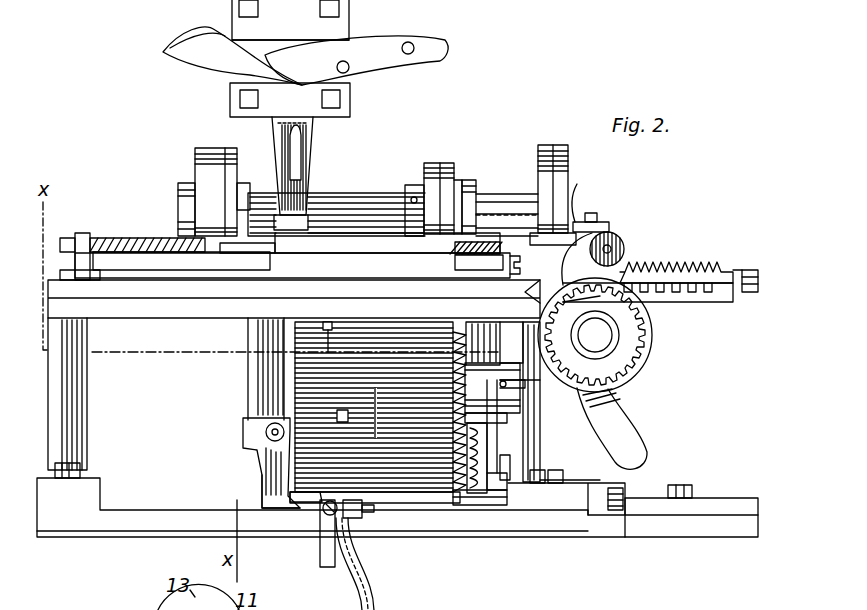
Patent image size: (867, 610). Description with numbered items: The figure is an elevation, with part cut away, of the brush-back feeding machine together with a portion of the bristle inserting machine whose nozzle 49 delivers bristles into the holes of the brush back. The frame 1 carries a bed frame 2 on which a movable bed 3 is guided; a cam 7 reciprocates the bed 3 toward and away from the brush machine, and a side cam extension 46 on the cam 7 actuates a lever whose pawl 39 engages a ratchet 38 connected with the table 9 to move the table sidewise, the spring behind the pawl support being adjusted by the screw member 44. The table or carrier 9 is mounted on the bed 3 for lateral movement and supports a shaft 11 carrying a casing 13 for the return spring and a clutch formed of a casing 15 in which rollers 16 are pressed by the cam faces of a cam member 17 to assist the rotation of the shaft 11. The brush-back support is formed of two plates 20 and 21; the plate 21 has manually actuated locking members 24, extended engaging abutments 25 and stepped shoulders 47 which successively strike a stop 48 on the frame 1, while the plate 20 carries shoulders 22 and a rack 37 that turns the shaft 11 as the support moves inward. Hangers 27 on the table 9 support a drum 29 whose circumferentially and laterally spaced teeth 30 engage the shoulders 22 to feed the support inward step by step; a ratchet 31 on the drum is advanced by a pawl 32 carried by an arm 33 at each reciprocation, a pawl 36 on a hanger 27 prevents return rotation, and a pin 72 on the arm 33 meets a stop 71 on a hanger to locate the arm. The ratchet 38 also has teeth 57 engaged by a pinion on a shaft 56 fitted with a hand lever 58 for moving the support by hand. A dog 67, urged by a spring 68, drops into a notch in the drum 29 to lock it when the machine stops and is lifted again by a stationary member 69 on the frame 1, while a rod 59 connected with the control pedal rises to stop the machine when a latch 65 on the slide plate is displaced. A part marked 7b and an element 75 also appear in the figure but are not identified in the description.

The frame 1 is at (527, 440).
The bed frame 2 is at (118, 303).
The movable bed 3 is at (90, 296).
The cam 7 is at (553, 147).
The base plate 7b is at (107, 517).
The table or carrier 9 is at (241, 262).
The shaft 11 is at (357, 196).
The casing 13 is at (203, 150).
The clutch casing 15 is at (430, 186).
The rollers 16 is at (458, 182).
The cam member 17 is at (466, 184).
The plate 20 is at (297, 265).
The plate 21 is at (387, 245).
The engaging shoulders 22 is at (490, 328).
The locking members 24 is at (238, 233).
The extended engaging abutments 25 is at (128, 243).
The hangers 27 is at (272, 336).
The drum 29 is at (375, 412).
The teeth 30 is at (342, 410).
The ratchet 31 is at (455, 384).
The pawl 32 is at (458, 507).
The arm 33 is at (482, 462).
The pawl 36 is at (384, 411).
The rack 37 is at (305, 218).
The ratchet 38 is at (672, 275).
The pawl 39 is at (612, 246).
The screw member 44 is at (748, 278).
The side cam extension 46 is at (576, 223).
The stepped shoulders 47 is at (88, 237).
The stop 48 is at (80, 263).
The nozzle 49 is at (310, 165).
The shaft 56 is at (595, 335).
The teeth 57 is at (705, 292).
The hand lever 58 is at (620, 418).
The rod 59 is at (353, 580).
The latch 65 is at (328, 540).
The dog 67 is at (273, 466).
The spring 68 is at (257, 424).
The stationary member 69 is at (302, 508).
The stop 71 is at (460, 327).
The pin 72 is at (463, 320).
The block 75 is at (483, 425).